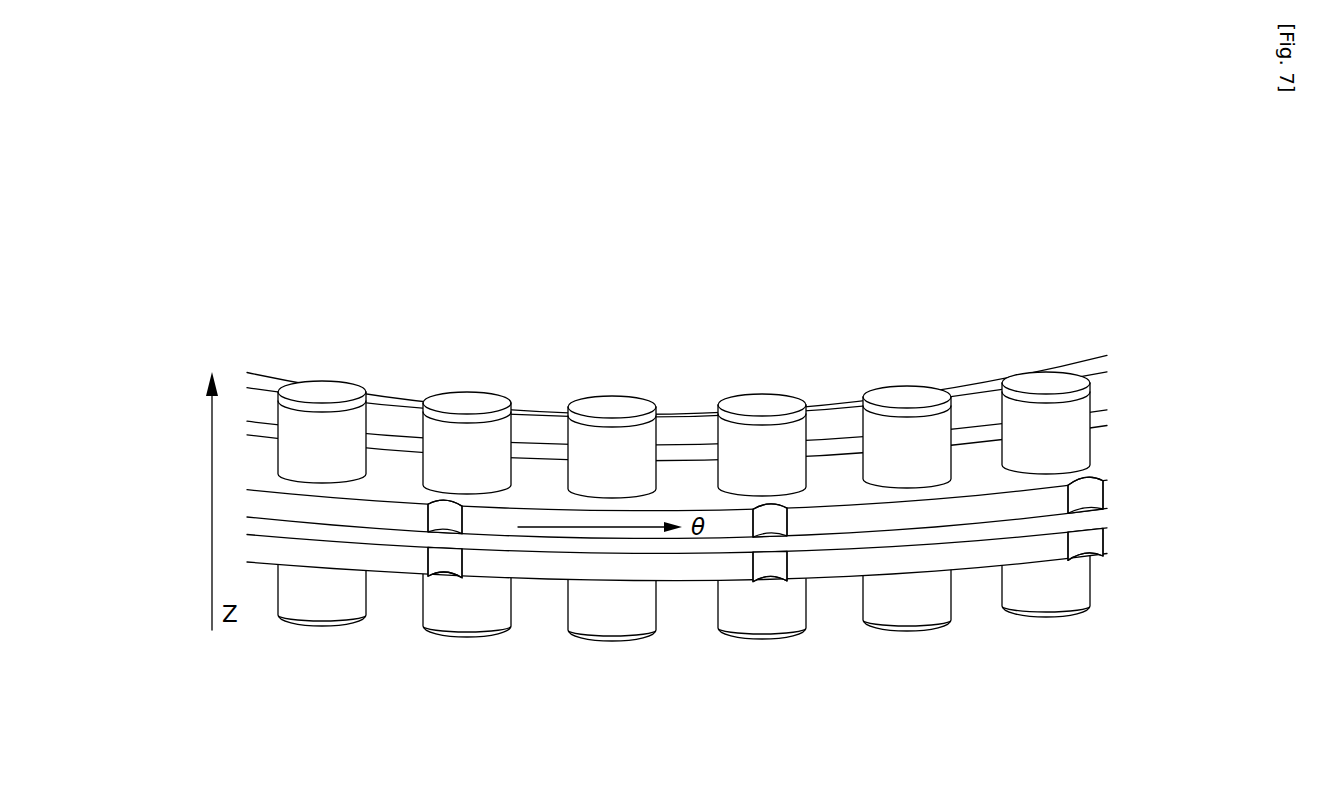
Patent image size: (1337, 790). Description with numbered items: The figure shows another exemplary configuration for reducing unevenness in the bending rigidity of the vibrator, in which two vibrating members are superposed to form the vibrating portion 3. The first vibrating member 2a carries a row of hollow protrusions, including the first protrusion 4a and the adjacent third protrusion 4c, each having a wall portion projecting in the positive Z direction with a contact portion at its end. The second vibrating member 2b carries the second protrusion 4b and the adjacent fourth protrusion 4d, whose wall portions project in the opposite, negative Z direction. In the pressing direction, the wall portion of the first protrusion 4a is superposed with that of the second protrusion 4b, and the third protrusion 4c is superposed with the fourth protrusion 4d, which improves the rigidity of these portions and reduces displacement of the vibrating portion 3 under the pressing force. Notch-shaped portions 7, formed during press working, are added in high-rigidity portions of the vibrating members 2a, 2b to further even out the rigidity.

The first vibrating member 2a is at (1040, 496).
The second vibrating member 2b is at (1040, 543).
The vibrating portion 3 is at (729, 521).
The first protrusion 4a is at (763, 437).
The second protrusion 4b is at (740, 618).
The third protrusion 4c is at (910, 437).
The fourth protrusion 4d is at (907, 607).
The notch-shaped portion 7 is at (770, 570).